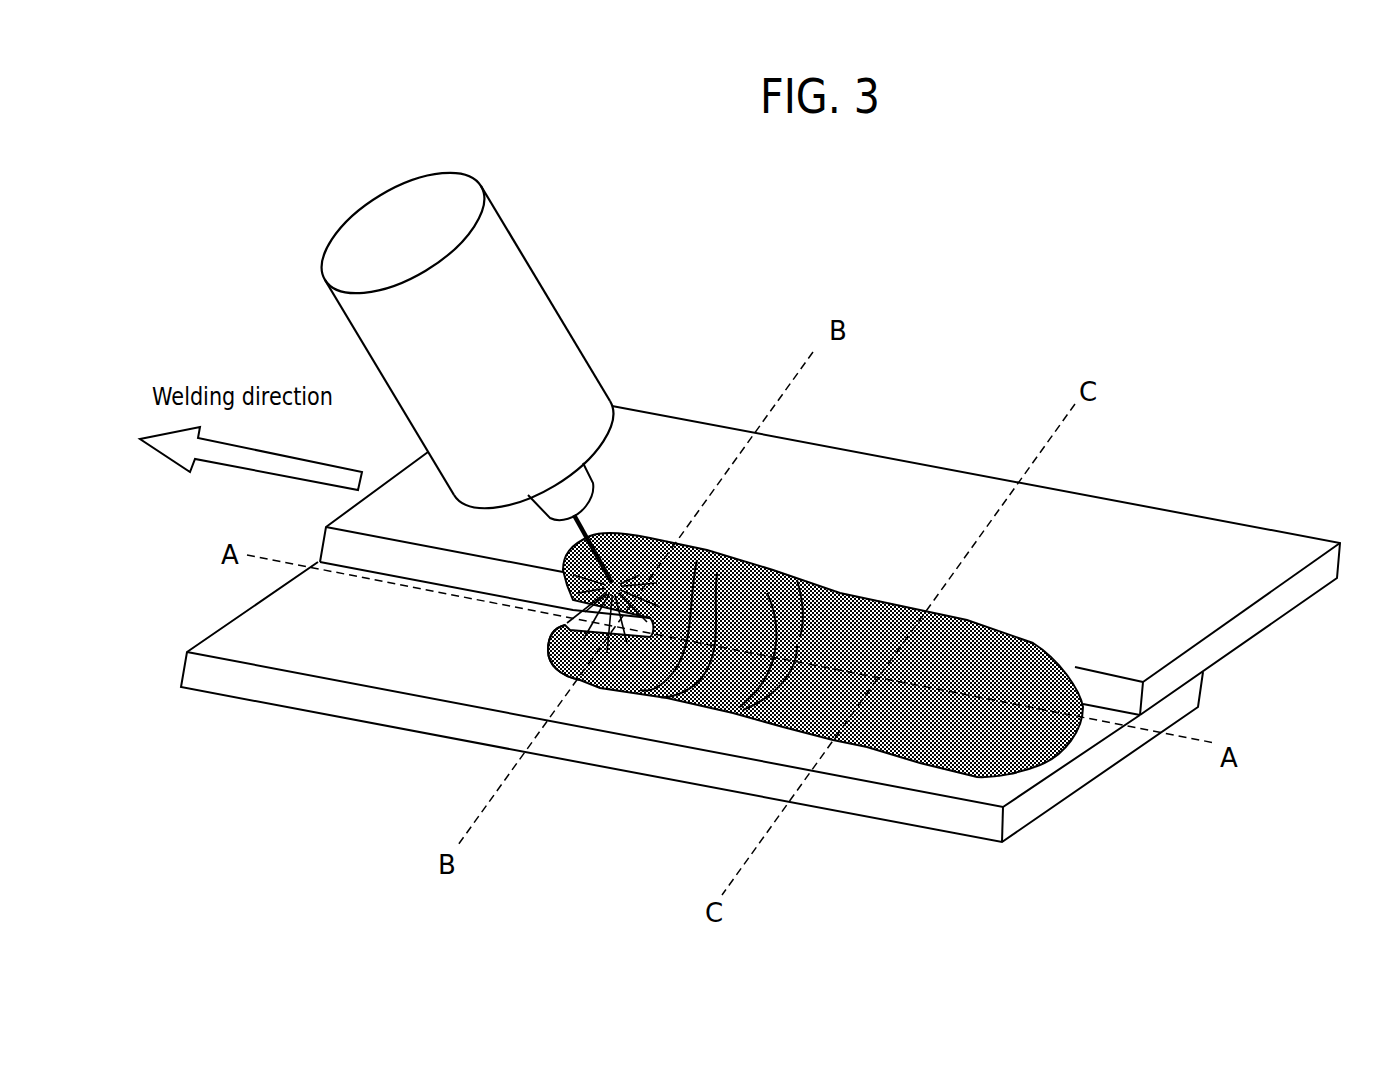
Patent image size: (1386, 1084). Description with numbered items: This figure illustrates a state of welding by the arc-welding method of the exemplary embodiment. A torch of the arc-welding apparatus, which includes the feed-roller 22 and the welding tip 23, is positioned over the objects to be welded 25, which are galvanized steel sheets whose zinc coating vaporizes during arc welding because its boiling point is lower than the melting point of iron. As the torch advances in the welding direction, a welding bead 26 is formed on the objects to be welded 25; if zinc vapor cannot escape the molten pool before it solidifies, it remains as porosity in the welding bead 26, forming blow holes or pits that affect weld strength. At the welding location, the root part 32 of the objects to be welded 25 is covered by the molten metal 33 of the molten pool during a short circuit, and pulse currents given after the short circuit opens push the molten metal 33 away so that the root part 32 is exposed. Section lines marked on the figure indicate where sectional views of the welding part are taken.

The feed-roller 22 is at (508, 343).
The welding tip 23 is at (592, 527).
The objects to be welded 25 is at (886, 508).
The welding bead 26 is at (922, 648).
The root part 32 is at (472, 588).
The molten metal 33 is at (543, 657).